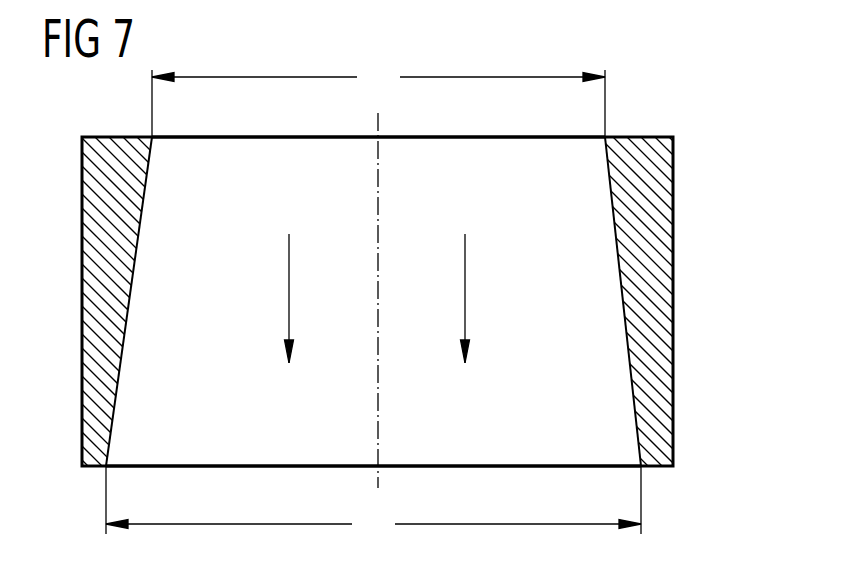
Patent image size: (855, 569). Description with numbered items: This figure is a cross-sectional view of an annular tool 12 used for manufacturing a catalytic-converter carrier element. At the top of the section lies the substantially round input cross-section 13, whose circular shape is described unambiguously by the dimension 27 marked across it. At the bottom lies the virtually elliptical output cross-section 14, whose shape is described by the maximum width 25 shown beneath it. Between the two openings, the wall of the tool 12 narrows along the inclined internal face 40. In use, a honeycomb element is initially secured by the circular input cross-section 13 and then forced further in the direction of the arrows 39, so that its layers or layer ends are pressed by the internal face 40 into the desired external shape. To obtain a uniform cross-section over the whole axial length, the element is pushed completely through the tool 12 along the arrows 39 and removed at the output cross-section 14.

The tool 12 is at (658, 246).
The input cross-section 13 is at (312, 141).
The output cross-section 14 is at (307, 460).
The arrows 39 is at (289, 281).
The internal face 40 is at (621, 311).
The dimension 27 is at (378, 99).
The maximum width 25 is at (373, 500).